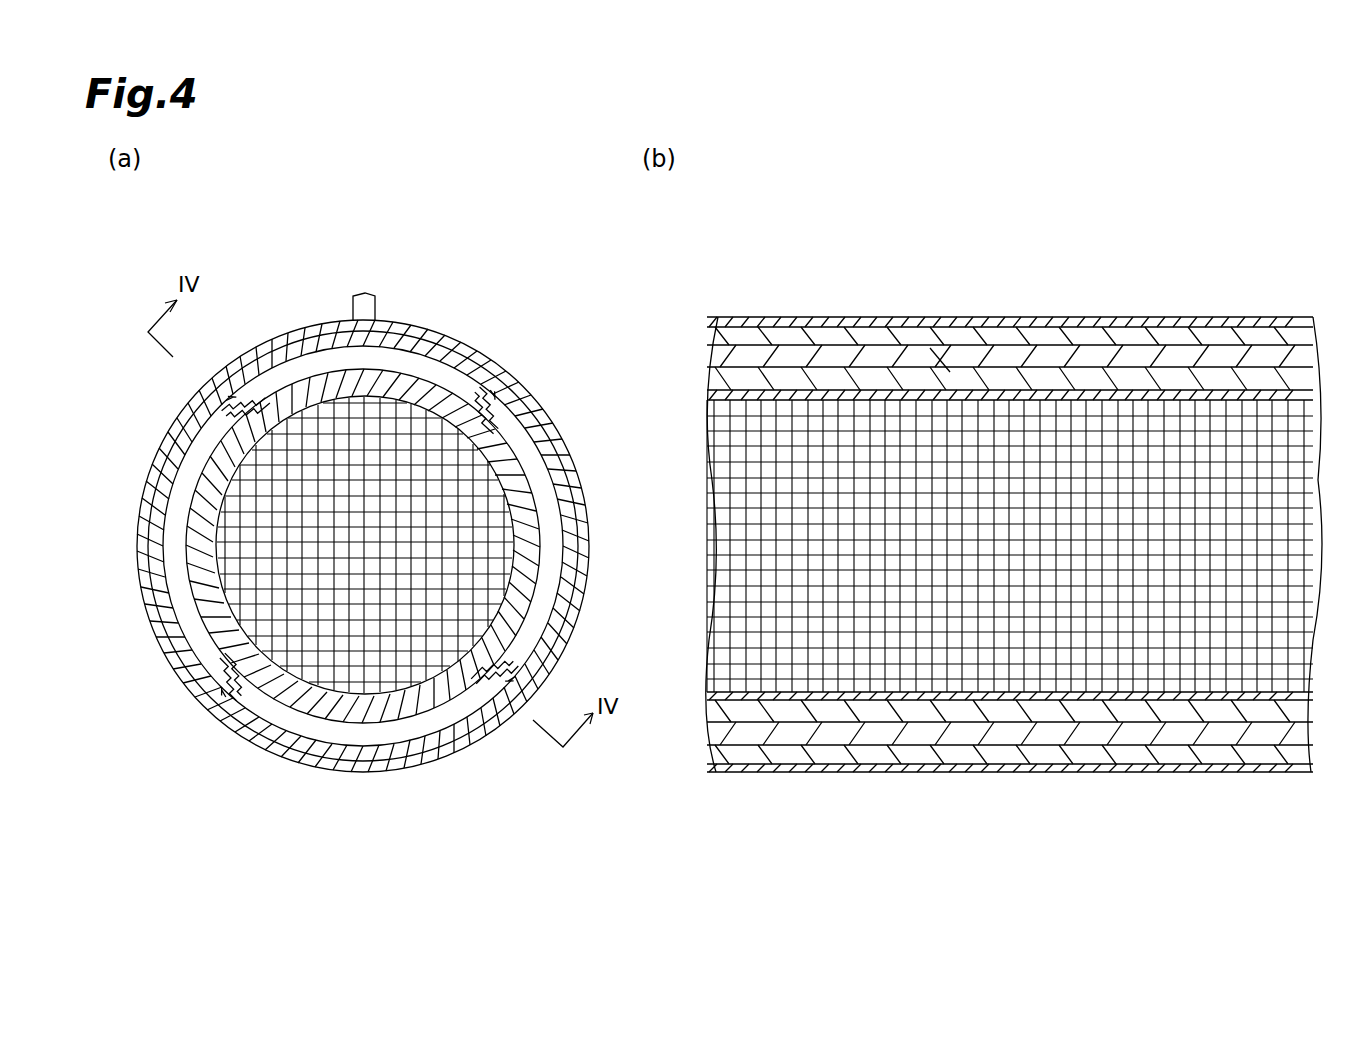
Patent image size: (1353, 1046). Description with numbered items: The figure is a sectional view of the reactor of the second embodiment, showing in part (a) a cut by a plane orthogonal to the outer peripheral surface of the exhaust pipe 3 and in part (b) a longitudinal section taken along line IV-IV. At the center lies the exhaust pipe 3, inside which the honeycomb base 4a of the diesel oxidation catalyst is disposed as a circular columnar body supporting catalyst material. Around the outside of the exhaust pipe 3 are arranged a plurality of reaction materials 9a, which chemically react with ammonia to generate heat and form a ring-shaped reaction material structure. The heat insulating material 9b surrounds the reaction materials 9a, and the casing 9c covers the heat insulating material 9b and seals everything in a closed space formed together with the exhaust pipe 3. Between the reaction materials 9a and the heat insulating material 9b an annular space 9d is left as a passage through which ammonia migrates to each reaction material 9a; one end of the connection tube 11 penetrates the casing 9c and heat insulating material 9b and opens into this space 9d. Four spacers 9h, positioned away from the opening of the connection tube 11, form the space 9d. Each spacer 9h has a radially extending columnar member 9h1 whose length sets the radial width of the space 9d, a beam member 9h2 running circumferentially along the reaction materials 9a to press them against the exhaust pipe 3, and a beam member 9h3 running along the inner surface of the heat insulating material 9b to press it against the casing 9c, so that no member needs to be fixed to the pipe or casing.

The exhaust pipe 3 is at (325, 695).
The honeycomb base 4a is at (283, 637).
The reaction material 9a is at (334, 387).
The heat insulating material 9b is at (162, 496).
The casing 9c is at (152, 472).
The space 9d is at (170, 533).
The spacer 9h is at (473, 393).
The columnar member 9h1 is at (243, 395).
The beam member 9h2 is at (255, 400).
The beam member 9h3 is at (238, 398).
The connection tube 11 is at (380, 310).